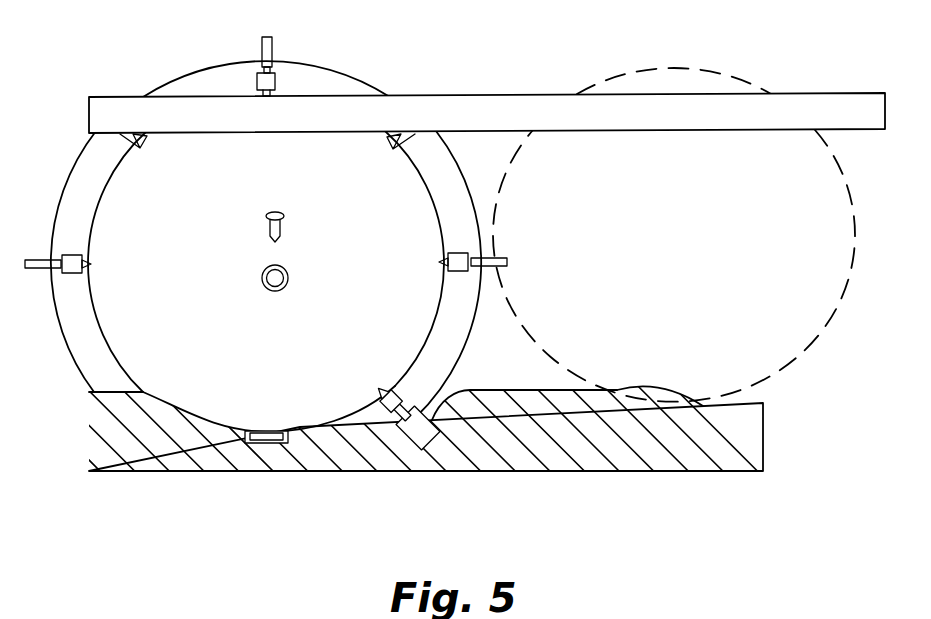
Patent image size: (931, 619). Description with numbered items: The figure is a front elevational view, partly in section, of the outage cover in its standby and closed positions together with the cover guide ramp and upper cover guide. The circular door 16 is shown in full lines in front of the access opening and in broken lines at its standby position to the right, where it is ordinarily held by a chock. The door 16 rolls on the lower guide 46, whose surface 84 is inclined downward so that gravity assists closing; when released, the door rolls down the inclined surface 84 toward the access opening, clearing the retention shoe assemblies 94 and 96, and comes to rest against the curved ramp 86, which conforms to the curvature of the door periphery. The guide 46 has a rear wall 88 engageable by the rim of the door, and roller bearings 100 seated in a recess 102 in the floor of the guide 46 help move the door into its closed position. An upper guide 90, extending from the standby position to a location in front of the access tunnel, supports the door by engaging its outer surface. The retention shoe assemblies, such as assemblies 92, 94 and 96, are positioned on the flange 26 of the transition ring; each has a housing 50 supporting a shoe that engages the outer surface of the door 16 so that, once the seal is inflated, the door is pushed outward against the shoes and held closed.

The door 16 is at (368, 216).
The flange 26 is at (200, 78).
The guide 46 is at (593, 462).
The housing 50 is at (273, 82).
The surface 84 is at (613, 408).
The ramp 86 is at (170, 402).
The rear wall 88 is at (468, 402).
The upper guide 90 is at (522, 108).
The retention shoe assembly 92 is at (450, 253).
The retention shoe assembly 94 is at (400, 386).
The upper retention shoe assembly 96 is at (400, 135).
The roller bearings 100 is at (287, 447).
The recess 102 is at (261, 447).